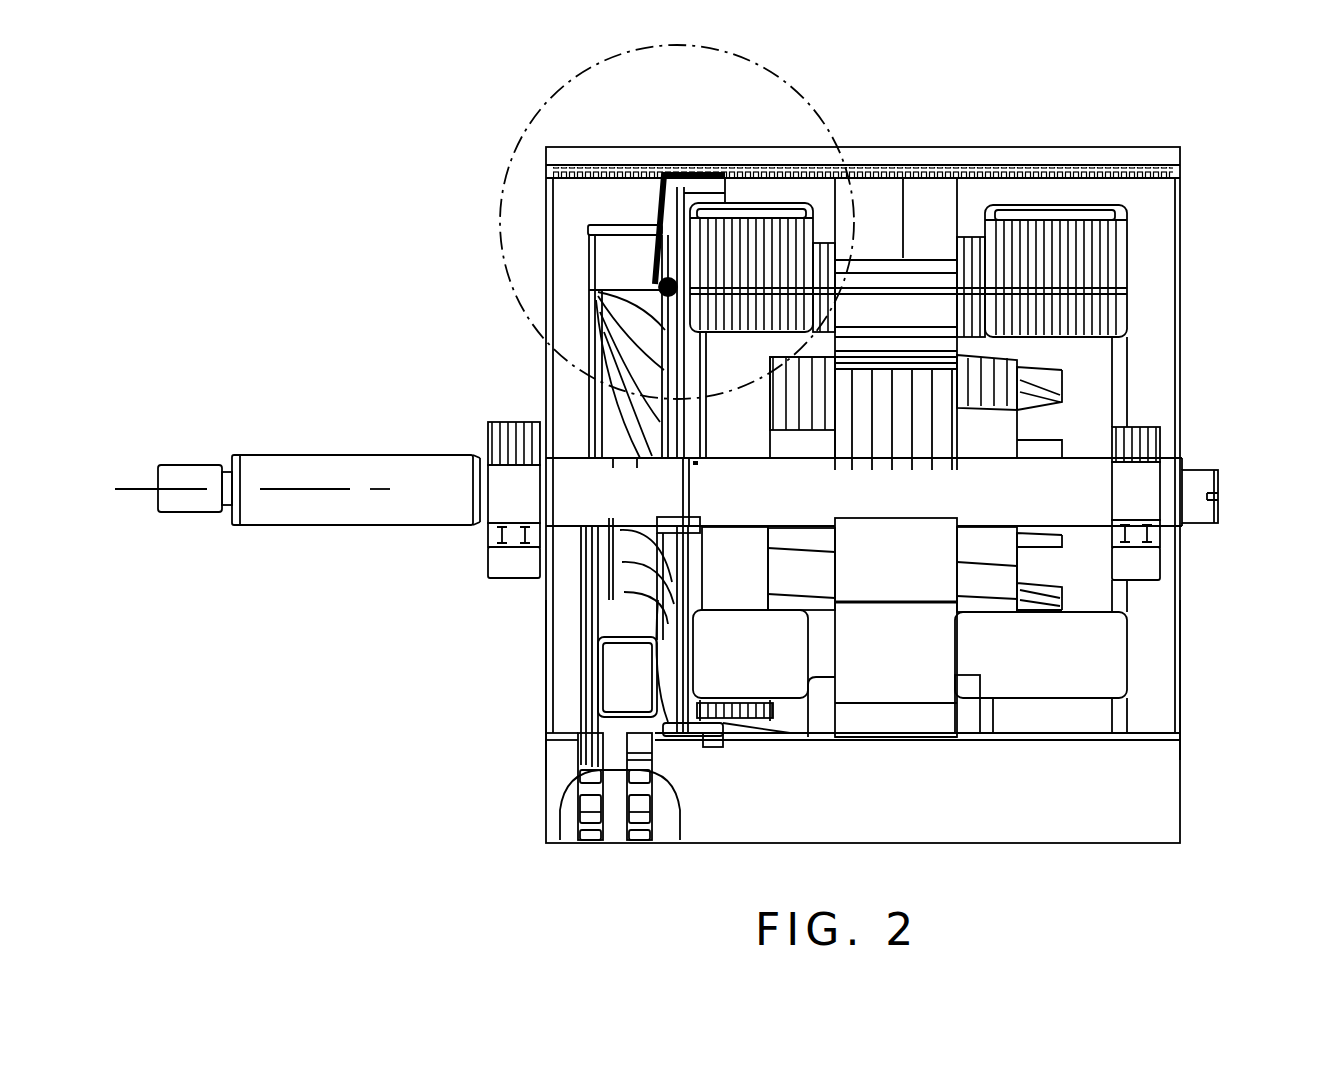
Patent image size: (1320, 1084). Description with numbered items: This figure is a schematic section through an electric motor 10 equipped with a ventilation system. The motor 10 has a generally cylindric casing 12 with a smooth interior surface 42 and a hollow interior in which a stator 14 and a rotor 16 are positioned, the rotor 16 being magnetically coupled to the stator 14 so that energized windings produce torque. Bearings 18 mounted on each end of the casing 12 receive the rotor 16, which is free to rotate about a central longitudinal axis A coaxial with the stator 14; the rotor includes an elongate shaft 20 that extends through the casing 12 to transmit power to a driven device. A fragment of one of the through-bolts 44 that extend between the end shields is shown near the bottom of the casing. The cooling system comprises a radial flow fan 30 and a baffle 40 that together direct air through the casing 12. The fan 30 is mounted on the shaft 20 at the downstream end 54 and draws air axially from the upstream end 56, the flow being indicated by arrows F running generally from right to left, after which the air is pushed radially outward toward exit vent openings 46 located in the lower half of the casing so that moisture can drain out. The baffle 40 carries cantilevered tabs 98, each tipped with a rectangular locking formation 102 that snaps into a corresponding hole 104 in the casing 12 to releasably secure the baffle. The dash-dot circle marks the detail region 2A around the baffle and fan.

The electric motor 10 is at (1068, 118).
The casing 12 is at (990, 147).
The stator 14 is at (1134, 256).
The rotor 16 is at (1020, 356).
The bearings 18 is at (512, 580).
The shaft 20 is at (388, 456).
The fan 30 is at (615, 214).
The baffle 40 is at (652, 184).
The interior surface 42 is at (921, 734).
The through-bolts 44 is at (771, 716).
The exit vent openings 46 is at (578, 806).
The downstream end 54 is at (542, 703).
The upstream end 56 is at (1184, 678).
The tabs 98 is at (690, 734).
The locking formation 102 is at (712, 748).
The hole 104 is at (752, 730).
The detail region 2A is at (503, 184).
The central longitudinal axis A is at (318, 490).
The air flow arrows F is at (744, 214).